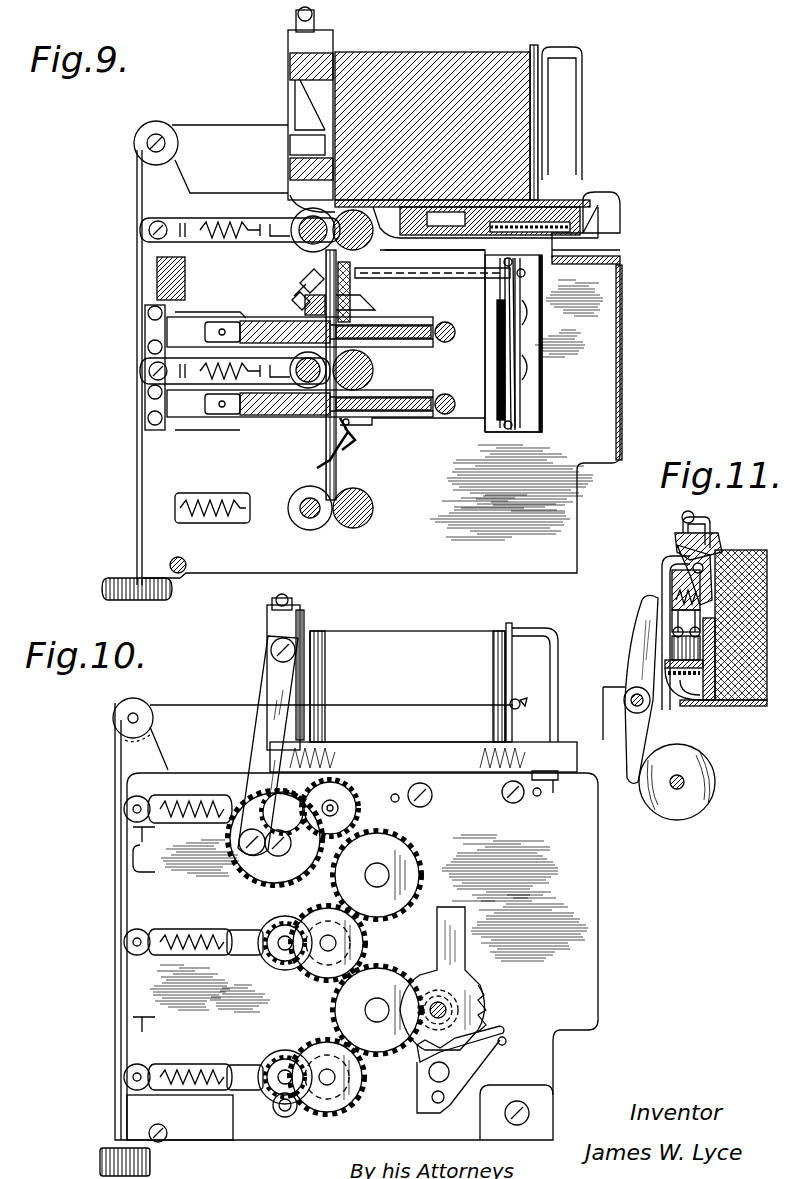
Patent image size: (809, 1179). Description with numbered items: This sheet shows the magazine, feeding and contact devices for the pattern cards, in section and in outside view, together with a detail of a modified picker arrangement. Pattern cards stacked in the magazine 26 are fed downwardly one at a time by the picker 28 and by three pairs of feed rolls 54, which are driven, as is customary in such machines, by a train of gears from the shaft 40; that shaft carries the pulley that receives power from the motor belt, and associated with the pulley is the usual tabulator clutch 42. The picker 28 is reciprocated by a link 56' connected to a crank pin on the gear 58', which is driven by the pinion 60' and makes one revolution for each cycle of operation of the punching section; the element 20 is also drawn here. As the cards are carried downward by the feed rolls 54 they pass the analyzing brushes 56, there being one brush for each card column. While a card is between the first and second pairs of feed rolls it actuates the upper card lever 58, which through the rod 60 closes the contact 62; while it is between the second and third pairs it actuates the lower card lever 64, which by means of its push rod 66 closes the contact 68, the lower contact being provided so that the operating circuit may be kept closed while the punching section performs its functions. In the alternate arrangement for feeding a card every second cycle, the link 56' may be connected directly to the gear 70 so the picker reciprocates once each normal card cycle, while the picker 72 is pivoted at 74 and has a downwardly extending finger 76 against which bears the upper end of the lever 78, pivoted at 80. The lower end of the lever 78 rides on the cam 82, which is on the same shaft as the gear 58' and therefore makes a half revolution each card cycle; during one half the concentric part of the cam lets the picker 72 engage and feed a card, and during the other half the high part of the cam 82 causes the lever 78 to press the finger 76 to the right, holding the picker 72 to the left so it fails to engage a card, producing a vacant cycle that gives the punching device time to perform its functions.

In FIG. 10, the drum 20 is at (325, 645).
In FIG. 9, the magazine 26 is at (410, 58).
In FIG. 11, the magazine 26 is at (740, 555).
In FIG. 9, the picker 28 is at (290, 63).
In FIG. 10, the picker 28 is at (268, 645).
In FIG. 10, the shaft 40 is at (448, 1005).
In FIG. 10, the tabulator clutch 42 is at (462, 1035).
In FIG. 9, the feed rolls 54 is at (363, 233).
In FIG. 9, the analyzing brushes 56 is at (272, 287).
In FIG. 10, the link 56' is at (252, 746).
In FIG. 9, the upper card lever 58 is at (356, 292).
In FIG. 10, the gear 58' is at (275, 847).
In FIG. 9, the rod 60 is at (440, 288).
In FIG. 10, the pinion 60' is at (383, 811).
In FIG. 9, the contact 62 is at (512, 262).
In FIG. 9, the lower card lever 64 is at (348, 440).
In FIG. 9, the push rod 66 is at (440, 420).
In FIG. 9, the contact 68 is at (508, 422).
In FIG. 10, the gear 70 is at (335, 790).
In FIG. 11, the picker 72 is at (714, 540).
In FIG. 11, the pivot 74 is at (680, 548).
In FIG. 11, the finger 76 is at (666, 580).
In FIG. 11, the lever 78 is at (637, 642).
In FIG. 11, the pivot 80 is at (648, 705).
In FIG. 11, the cam 82 is at (690, 812).